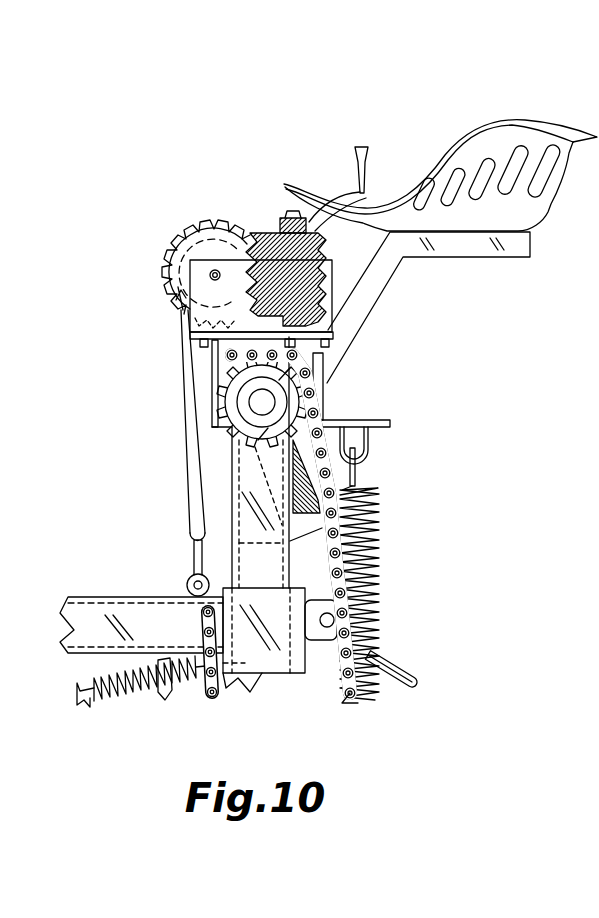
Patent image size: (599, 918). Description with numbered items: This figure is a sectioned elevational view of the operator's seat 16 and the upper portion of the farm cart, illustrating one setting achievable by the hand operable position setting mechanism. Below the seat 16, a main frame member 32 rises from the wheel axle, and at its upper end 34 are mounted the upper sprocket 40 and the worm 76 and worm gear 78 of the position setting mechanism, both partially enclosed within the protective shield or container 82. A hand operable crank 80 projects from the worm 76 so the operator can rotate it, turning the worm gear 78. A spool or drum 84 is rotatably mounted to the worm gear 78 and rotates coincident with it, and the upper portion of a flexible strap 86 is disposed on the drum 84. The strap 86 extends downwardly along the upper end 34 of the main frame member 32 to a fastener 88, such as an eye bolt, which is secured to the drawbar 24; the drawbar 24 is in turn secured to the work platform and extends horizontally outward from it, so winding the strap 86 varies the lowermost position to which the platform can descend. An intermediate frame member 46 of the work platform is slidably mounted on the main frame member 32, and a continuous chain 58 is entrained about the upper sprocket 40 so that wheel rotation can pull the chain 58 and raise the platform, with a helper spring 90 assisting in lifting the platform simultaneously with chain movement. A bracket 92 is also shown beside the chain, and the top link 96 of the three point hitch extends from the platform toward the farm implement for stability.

The operator's seat 16 is at (513, 118).
The drawbar 24 is at (102, 597).
The main frame member 32 is at (230, 465).
The upper end 34 is at (158, 363).
The upper sprocket 40 is at (217, 420).
The intermediate frame member 46 is at (308, 657).
The chain 58 is at (352, 703).
The worm 76 is at (330, 243).
The worm gear 78 is at (221, 218).
The hand operable crank 80 is at (348, 165).
The protective shield or container 82 is at (336, 290).
The spool or drum 84 is at (187, 237).
The flexible strap 86 is at (185, 440).
The fastener 88 is at (192, 570).
The helper spring 90 is at (380, 582).
The bracket 92 is at (383, 418).
The top link 96 is at (400, 660).